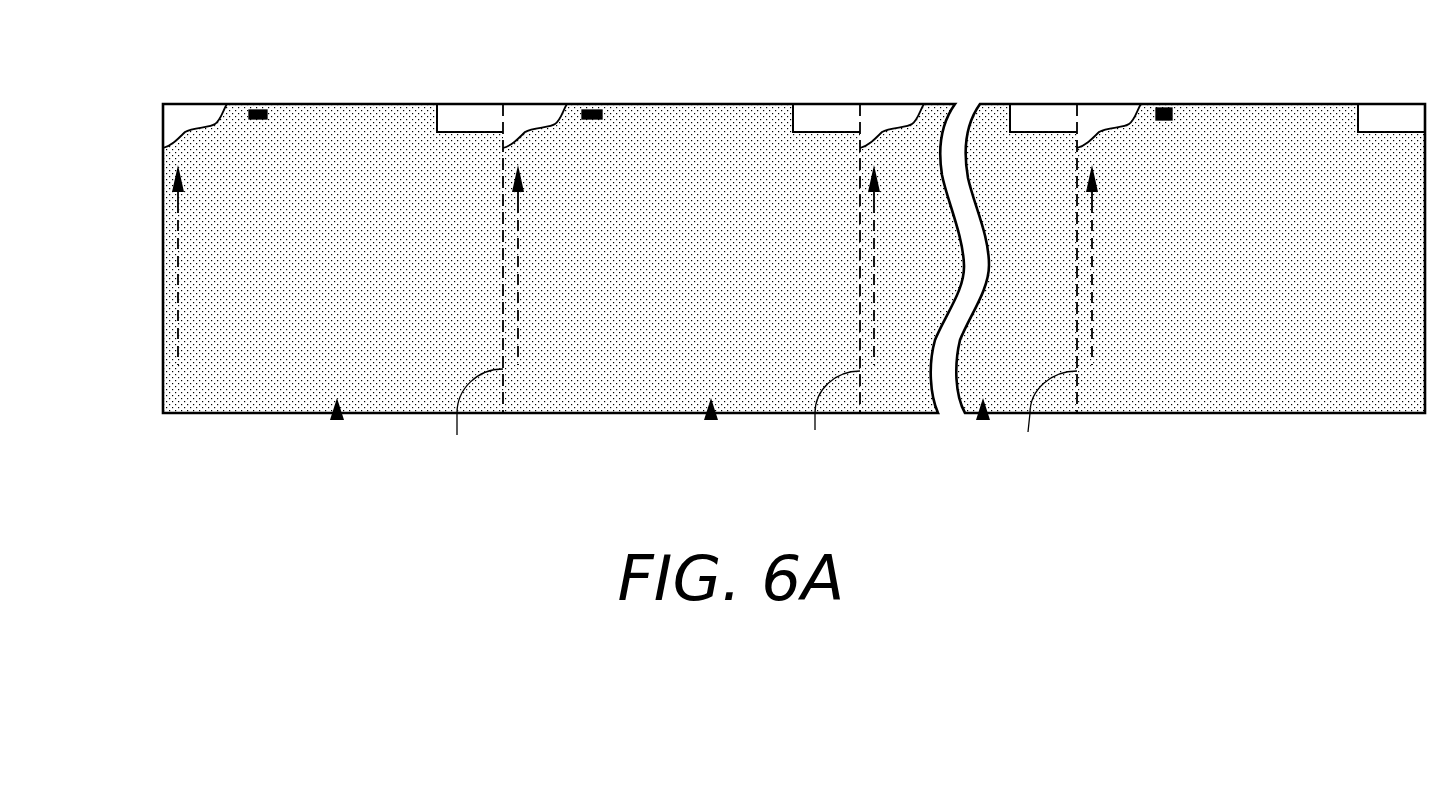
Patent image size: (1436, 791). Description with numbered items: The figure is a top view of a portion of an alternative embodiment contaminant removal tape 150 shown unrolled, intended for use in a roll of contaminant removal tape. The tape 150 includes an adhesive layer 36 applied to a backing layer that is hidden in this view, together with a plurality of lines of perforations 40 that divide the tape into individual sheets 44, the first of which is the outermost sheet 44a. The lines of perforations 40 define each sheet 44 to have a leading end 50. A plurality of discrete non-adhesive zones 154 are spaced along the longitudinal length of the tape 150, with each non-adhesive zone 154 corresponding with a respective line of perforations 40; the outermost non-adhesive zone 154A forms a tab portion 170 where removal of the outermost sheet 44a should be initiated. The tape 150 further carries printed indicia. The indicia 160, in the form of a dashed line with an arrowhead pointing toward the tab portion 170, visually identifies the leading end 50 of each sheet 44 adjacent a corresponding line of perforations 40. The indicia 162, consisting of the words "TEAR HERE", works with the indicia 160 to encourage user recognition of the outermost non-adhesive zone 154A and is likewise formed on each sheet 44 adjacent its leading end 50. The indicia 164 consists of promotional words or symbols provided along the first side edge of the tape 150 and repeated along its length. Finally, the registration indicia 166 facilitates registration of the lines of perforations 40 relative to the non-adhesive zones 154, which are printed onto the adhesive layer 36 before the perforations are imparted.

The contaminant removal tape 150 is at (1137, 57).
The non-adhesive zones 154 is at (463, 95).
The outermost non-adhesive zone 154A is at (185, 107).
The registration indicia 166 is at (256, 109).
The indicia 164 is at (392, 107).
The tab portion 170 is at (172, 134).
The indicia 160 is at (182, 223).
The indicia 162 is at (193, 337).
The leading end 50 is at (163, 393).
The adhesive layer 36 is at (242, 365).
The lines of perforations 40 is at (756, 418).
The sheet 44 is at (711, 418).
The first sheet 44a is at (337, 418).